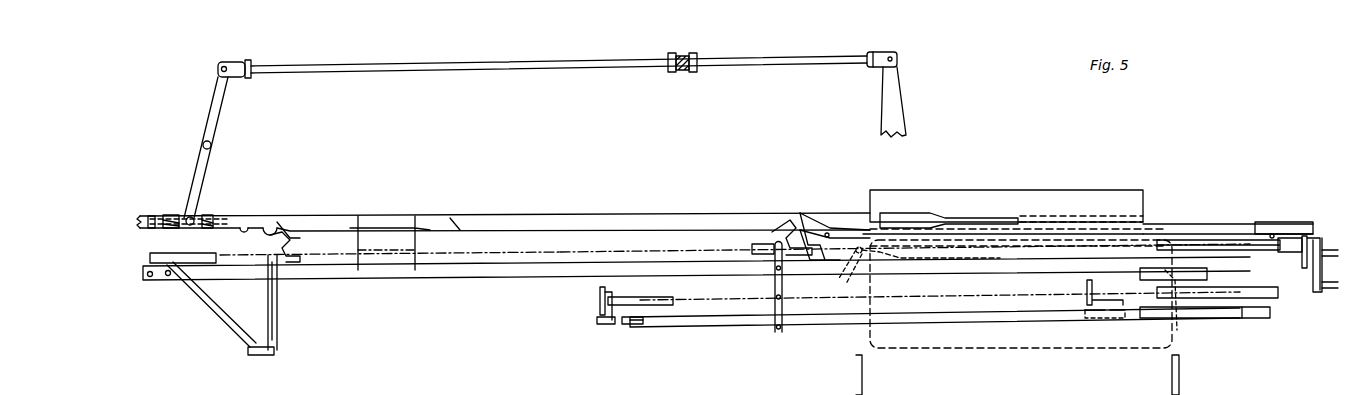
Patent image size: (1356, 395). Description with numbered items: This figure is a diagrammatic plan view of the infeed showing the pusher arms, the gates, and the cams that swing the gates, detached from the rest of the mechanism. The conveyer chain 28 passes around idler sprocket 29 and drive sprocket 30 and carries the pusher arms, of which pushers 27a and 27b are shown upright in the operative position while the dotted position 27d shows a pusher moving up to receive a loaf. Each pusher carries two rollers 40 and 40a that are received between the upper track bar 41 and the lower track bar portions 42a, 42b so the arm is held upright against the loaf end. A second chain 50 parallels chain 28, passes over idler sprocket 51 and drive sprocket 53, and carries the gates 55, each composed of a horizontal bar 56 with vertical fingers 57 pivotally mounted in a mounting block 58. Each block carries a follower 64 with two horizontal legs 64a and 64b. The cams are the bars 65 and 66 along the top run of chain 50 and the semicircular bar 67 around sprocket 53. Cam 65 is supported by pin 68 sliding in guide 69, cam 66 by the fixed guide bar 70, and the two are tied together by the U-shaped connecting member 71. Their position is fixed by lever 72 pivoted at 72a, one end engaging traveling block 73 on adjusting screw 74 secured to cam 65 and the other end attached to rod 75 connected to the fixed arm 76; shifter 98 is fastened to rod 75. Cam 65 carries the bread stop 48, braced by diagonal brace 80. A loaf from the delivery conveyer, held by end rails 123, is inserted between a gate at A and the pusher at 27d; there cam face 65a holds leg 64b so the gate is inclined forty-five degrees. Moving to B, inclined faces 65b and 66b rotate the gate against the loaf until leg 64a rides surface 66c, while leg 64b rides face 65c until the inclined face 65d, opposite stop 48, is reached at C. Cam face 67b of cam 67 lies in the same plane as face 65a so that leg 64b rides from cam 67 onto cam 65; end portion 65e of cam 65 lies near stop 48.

The pusher 27a is at (1086, 300).
The pusher 27b is at (595, 300).
The pusher position 27d is at (1191, 332).
The conveyer chain 28 is at (990, 320).
The idler sprocket 29 is at (662, 298).
The drive sprocket 30 is at (1270, 296).
The roller 40 is at (606, 325).
The roller 40a is at (630, 325).
The upper track bar 41 is at (708, 325).
The bar 42a is at (640, 328).
The bar 42b is at (1262, 315).
The bread stop 48 is at (280, 347).
The second chain 50 is at (455, 232).
The idler sprocket 51 is at (190, 254).
The drive sprocket 53 is at (1250, 240).
The gate 55 is at (770, 285).
The horizontal bar 56 is at (784, 316).
The vertical fingers 57 is at (778, 332).
The mounting block 58 is at (752, 247).
The follower 64 is at (772, 232).
The follower leg 64a is at (880, 264).
The follower leg 64b is at (288, 238).
The cam bar 65 is at (586, 215).
The cam face 65a is at (1066, 236).
The inclined cam face 65b is at (826, 236).
The cam face 65c is at (508, 230).
The inclined cam face 65d is at (270, 222).
The tube end portion 65e is at (248, 216).
The cam bar 66 is at (484, 270).
The inclined cam face 66b is at (810, 228).
The cam surface 66c is at (548, 260).
The semicircular cam bar 67 is at (1300, 222).
The vertical side face 67b is at (1273, 234).
The pin 68 is at (975, 218).
The guide 69 is at (1094, 215).
The guide bar 70 is at (1032, 315).
The U-shaped connecting member 71 is at (378, 263).
The lever 72 is at (225, 112).
The pivot 72a is at (211, 147).
The traveling block 73 is at (208, 215).
The adjusting screw 74 is at (172, 215).
The rod 75 is at (552, 66).
The fixed arm 76 is at (904, 97).
The diagonal brace 80 is at (212, 308).
The shifter 98 is at (676, 72).
The end rails 123 is at (856, 388).
The gate position A is at (845, 290).
The gate position B is at (770, 312).
The gate position C is at (268, 318).